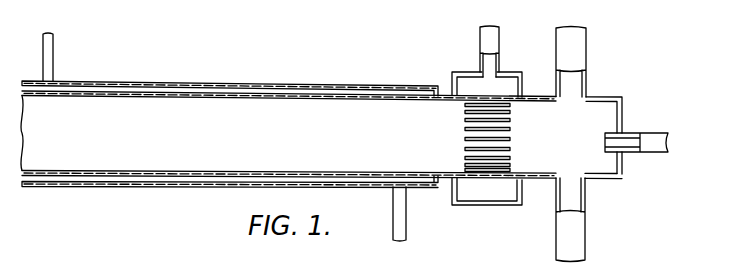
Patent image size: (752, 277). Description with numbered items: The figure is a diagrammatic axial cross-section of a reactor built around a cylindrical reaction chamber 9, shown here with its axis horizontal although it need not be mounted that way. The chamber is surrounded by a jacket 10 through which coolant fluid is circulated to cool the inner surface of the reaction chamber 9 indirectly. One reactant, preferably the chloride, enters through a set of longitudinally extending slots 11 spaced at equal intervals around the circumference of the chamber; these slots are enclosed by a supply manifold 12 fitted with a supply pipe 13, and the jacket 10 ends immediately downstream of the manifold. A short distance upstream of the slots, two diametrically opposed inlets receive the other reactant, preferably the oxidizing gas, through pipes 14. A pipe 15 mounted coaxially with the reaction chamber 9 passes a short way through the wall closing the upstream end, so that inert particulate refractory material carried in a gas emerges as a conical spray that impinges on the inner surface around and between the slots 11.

The cylindrical reaction chamber 9 is at (245, 96).
The jacket 10 is at (163, 82).
The longitudinally extending slots 11 is at (510, 121).
The supply manifold 12 is at (453, 82).
The supply pipe 13 is at (480, 48).
The pipes 14 is at (557, 53).
The pipe 15 is at (645, 141).